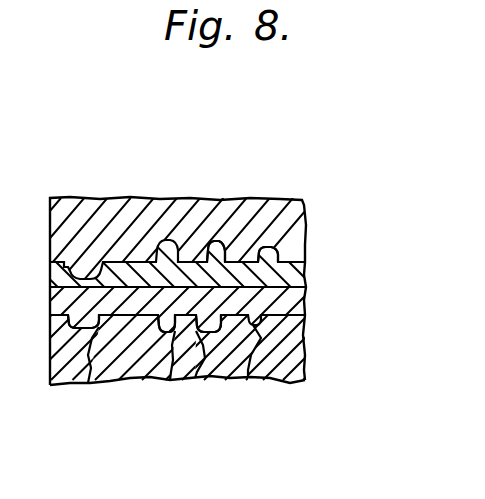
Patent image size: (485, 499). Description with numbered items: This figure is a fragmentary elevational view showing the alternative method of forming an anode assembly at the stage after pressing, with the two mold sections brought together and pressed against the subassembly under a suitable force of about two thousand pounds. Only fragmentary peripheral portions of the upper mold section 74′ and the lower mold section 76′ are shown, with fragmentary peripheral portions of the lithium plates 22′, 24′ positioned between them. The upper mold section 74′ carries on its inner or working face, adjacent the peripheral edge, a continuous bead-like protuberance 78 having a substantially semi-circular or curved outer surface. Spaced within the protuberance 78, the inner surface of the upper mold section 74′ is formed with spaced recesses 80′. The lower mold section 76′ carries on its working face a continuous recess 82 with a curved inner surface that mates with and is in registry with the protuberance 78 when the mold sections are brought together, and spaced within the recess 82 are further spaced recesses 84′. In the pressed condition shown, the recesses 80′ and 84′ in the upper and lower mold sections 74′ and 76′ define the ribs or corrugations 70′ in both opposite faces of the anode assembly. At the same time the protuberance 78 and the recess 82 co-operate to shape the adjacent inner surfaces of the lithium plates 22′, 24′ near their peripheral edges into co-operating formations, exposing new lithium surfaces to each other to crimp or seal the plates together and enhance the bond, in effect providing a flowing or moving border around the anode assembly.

The upper mold section 74′ is at (291, 194).
The protuberance 78 is at (89, 268).
The recesses 80′ is at (208, 198).
The anode ribs 70′ is at (235, 252).
The lithium plate 22′ is at (306, 268).
The lithium plate 24′ is at (308, 297).
The recess 82 is at (92, 382).
The recesses 84′ is at (190, 381).
The lower mold section 76′ is at (291, 378).